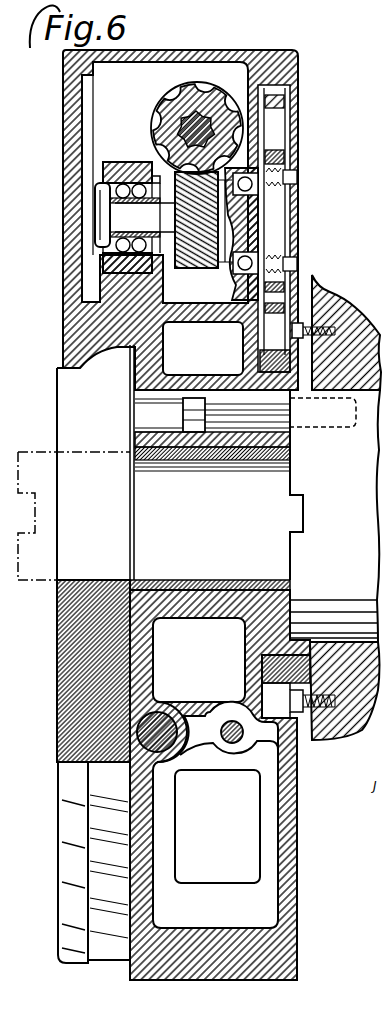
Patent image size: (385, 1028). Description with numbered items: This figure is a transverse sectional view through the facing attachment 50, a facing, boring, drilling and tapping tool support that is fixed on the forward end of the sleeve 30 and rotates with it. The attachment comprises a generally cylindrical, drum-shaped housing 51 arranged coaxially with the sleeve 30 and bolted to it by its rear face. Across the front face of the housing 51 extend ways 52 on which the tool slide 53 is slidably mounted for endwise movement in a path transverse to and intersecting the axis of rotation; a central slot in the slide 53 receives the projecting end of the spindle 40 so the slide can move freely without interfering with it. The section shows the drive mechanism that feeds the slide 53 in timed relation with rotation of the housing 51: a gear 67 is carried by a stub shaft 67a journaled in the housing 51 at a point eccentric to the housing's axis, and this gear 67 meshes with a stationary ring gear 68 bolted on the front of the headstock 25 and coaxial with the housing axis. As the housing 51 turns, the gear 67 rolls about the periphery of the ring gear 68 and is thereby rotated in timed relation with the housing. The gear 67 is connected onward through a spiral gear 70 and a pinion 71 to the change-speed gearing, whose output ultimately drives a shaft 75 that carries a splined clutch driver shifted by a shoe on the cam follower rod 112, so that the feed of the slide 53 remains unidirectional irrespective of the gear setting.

The headstock 25 is at (350, 333).
The sleeve 30 is at (292, 482).
The spindle 40 is at (57, 583).
The facing attachment 50 is at (301, 136).
The housing 51 is at (243, 52).
The ways 52 is at (92, 952).
The tool slide 53 is at (68, 738).
The gear 67 is at (258, 300).
The stub shaft 67a is at (120, 213).
The ring gear 68 is at (268, 355).
The spiral gear 70 is at (200, 262).
The pinion 71 is at (178, 100).
The shaft 75 is at (164, 714).
The cam follower rod 112 is at (232, 721).